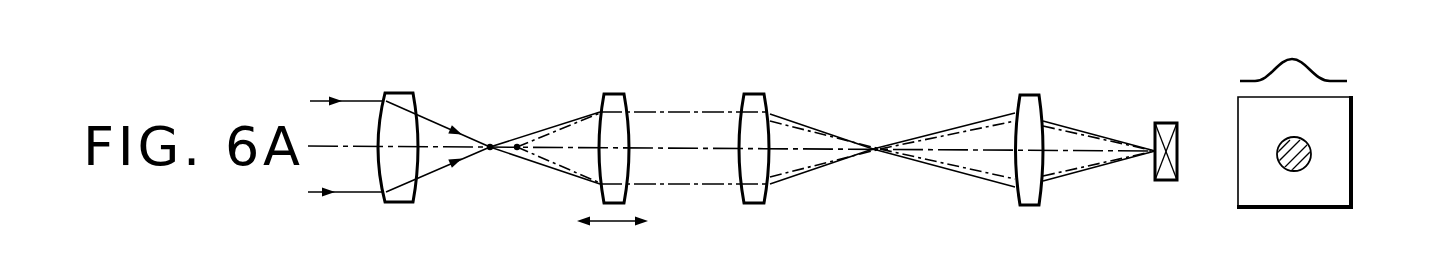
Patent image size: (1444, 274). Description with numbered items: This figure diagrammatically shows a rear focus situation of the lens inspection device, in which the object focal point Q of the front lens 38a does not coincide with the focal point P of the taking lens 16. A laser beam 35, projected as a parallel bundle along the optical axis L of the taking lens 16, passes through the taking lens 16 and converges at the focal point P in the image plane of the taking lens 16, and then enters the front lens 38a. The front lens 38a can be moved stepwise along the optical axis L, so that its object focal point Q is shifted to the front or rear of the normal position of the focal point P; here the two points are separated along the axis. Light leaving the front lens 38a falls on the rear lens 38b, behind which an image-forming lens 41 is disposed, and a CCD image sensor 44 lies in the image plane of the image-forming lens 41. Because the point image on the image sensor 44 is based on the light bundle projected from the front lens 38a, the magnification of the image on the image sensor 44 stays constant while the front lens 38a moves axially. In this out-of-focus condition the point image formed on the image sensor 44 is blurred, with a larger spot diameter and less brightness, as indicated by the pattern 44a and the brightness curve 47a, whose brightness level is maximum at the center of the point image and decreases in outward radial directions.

The taking lens 16 is at (399, 91).
The laser beam 35 is at (341, 194).
The front lens 38a is at (612, 92).
The rear lens 38b is at (753, 92).
The image-forming lens 41 is at (1028, 94).
The CCD image sensor 44 is at (1167, 122).
The pattern 44a is at (1351, 166).
The curve of brightness 47a is at (1325, 73).
The focal point P is at (516, 144).
The object focal point Q is at (490, 151).
The optical axis L is at (706, 150).